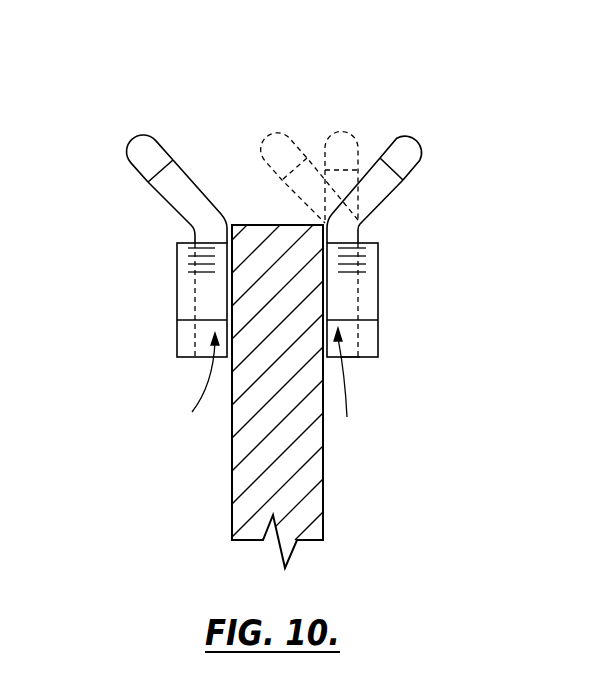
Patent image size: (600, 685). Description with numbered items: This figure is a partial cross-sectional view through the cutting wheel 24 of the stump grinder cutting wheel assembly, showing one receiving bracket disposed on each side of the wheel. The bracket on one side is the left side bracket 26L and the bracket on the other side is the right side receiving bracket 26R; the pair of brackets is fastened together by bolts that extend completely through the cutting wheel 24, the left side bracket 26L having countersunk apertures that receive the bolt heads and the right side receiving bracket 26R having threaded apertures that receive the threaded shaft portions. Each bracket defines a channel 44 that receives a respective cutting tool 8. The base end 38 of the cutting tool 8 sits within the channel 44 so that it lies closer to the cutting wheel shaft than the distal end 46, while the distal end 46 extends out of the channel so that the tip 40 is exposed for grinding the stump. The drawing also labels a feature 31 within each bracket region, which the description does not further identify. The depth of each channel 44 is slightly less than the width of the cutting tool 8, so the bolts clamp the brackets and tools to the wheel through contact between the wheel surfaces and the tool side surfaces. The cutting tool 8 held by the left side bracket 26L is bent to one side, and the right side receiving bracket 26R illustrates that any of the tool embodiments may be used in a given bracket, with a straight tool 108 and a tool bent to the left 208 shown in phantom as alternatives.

The cutting tool 8 is at (193, 233).
The cutting wheel 24 is at (323, 492).
The left side bracket 26L is at (177, 343).
The right side receiving bracket 26R is at (378, 343).
The pin retention contacts 31 is at (208, 245).
The base end 38 is at (353, 358).
The tip 40 is at (133, 143).
The channel 44 is at (260, 396).
The distal end 46 is at (172, 165).
The straight cutting tool 108 is at (338, 130).
The cutting tool bent to the left 208 is at (279, 130).